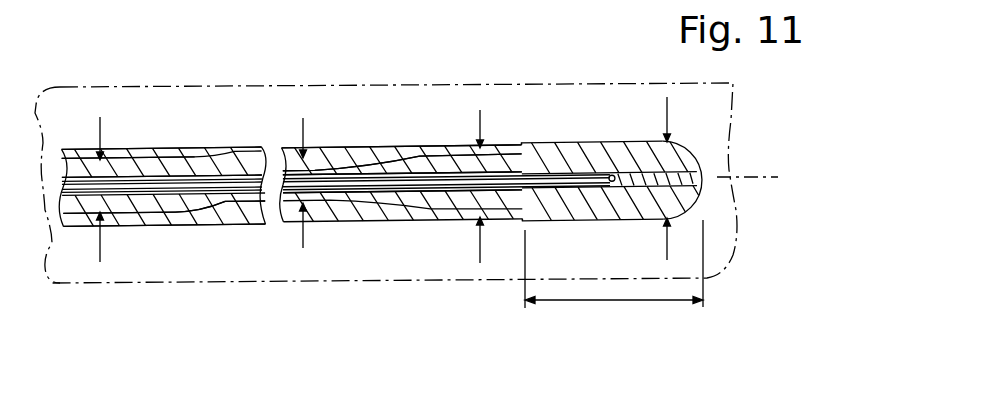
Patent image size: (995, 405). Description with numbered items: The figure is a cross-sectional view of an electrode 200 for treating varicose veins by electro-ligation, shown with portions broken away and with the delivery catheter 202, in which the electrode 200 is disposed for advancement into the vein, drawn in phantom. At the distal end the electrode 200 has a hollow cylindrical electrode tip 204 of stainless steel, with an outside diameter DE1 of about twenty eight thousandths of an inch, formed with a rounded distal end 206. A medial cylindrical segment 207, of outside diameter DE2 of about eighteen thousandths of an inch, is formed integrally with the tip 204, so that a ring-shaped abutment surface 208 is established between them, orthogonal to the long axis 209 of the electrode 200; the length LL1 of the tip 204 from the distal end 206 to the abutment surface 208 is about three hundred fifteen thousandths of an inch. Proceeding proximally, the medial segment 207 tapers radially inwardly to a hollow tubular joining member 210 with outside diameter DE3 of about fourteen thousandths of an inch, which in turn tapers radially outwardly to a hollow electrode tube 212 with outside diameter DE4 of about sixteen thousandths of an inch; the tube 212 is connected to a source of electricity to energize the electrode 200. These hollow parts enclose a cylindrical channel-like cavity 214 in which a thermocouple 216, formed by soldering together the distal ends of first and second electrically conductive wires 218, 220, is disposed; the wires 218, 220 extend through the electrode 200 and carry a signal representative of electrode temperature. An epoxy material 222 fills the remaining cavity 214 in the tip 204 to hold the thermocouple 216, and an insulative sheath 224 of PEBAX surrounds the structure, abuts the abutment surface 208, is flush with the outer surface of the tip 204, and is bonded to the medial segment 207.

The electrode 200 is at (466, 62).
The delivery catheter 202 is at (377, 290).
The electrode tip 204 is at (605, 143).
The rounded distal end 206 is at (690, 148).
The medial cylindrical segment 207 is at (463, 150).
The ring-shaped abutment surface 208 is at (507, 147).
The long axis 209 is at (748, 177).
The hollow tubular joining member 210 is at (357, 170).
The hollow electrode tube 212 is at (130, 167).
The cylindrical channel-like cavity 214 is at (633, 180).
The thermocouple 216 is at (611, 182).
The first electrically conductive wire 218 is at (318, 170).
The second electrically conductive wire 220 is at (537, 188).
The epoxy material 222 is at (558, 190).
The insulative sheath 224 is at (245, 157).
The outside diameter of electrode tip DE1 is at (667, 243).
The outside diameter of medial segment DE2 is at (478, 233).
The outside diameter of joining member DE3 is at (302, 233).
The outside diameter of electrode tube DE4 is at (102, 250).
The length of electrode tip LL1 is at (568, 302).